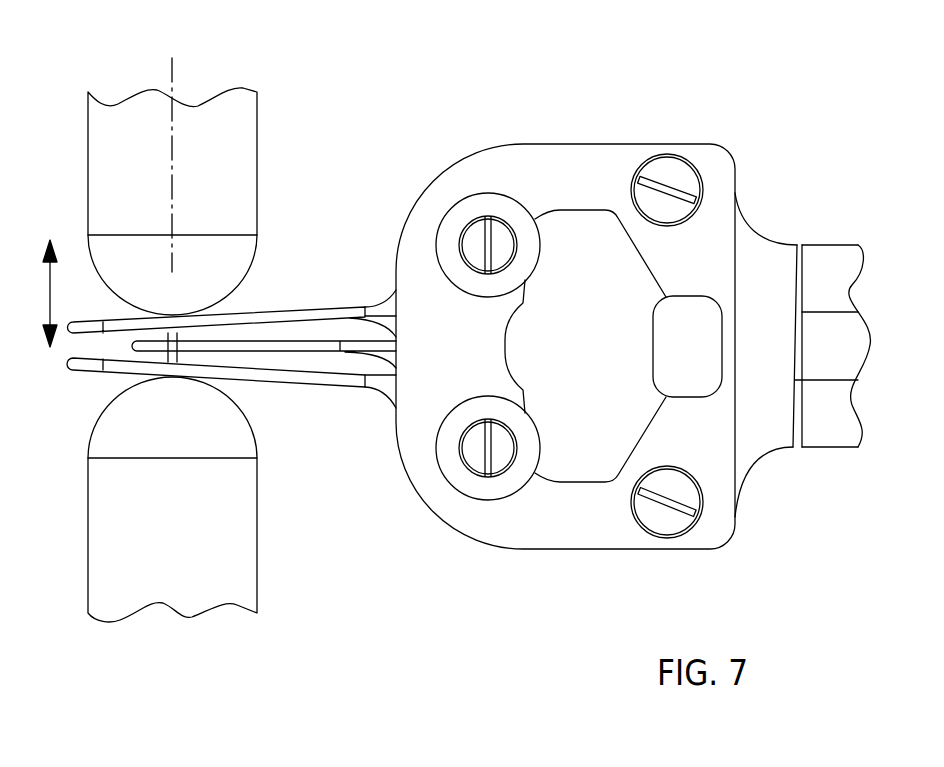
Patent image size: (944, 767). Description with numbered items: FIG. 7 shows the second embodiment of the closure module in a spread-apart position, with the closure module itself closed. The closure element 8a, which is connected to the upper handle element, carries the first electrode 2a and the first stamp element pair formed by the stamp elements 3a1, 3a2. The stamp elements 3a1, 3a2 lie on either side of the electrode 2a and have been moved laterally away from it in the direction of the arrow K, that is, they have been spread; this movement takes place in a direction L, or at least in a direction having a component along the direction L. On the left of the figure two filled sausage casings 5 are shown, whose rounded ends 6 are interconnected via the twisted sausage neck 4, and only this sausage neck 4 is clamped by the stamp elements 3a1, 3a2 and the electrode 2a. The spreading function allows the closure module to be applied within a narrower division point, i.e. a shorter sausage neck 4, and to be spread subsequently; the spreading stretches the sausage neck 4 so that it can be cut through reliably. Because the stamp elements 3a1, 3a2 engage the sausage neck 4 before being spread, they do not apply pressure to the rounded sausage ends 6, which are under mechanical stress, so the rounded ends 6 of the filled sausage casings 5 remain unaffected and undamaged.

The first electrode 2a is at (333, 345).
The stamp element 3a1 is at (297, 375).
The stamp element 3a2 is at (290, 312).
The sausage neck 4 is at (160, 357).
The filled sausage casing 5 is at (101, 188).
The rounded sausage end 6 is at (143, 302).
The closure element 8a is at (575, 157).
The direction of spreading arrow K is at (42, 293).
The direction of stamp element movement L is at (173, 144).